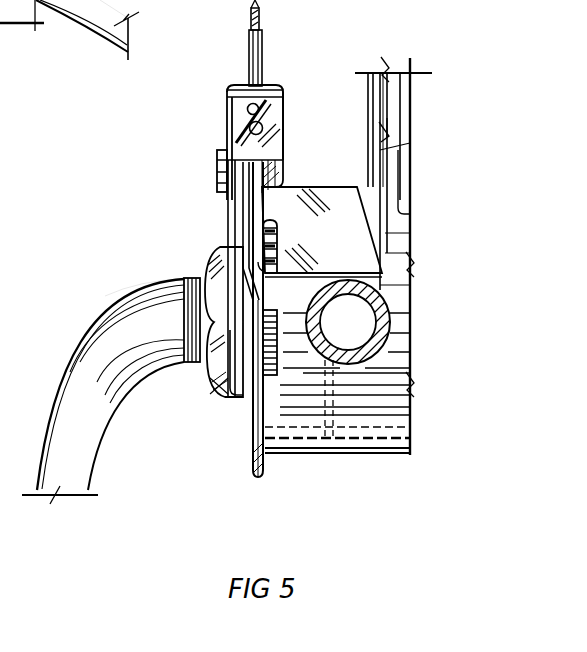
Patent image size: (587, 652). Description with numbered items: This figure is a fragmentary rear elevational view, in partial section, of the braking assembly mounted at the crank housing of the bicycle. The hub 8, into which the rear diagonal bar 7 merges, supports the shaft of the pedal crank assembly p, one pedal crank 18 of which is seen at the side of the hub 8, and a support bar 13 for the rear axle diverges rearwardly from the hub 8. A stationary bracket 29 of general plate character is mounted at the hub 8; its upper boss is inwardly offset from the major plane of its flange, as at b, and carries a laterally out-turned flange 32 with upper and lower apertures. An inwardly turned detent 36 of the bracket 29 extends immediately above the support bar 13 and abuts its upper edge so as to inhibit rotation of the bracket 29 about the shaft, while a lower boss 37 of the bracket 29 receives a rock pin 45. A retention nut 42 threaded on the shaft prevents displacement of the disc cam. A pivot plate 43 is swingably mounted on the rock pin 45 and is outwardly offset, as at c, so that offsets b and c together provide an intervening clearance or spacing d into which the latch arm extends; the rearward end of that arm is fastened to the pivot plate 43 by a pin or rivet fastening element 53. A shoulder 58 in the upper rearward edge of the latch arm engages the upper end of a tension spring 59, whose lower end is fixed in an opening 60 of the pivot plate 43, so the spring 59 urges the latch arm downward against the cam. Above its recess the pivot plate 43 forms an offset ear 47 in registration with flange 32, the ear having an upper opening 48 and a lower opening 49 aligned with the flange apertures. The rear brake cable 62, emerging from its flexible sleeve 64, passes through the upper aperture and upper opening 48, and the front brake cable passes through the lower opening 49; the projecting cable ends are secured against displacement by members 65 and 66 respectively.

The rear diagonal bar 7 is at (402, 102).
The hub 8 is at (357, 450).
The support bar 13 is at (388, 303).
The pedal crank 18 is at (63, 363).
The stationary bracket 29 is at (152, 0).
The out-turned flange 32 is at (227, 88).
The detent 36 is at (290, 249).
The boss 37 is at (250, 442).
The retention nut 42 is at (212, 268).
The pivot plate 43 is at (243, 228).
The rock pin 45 is at (232, 380).
The offset ear 47 is at (226, 100).
The upper opening 48 is at (279, 101).
The lower opening 49 is at (262, 128).
The fastening element 53 is at (217, 166).
The shoulder 58 is at (278, 165).
The tension spring 59 is at (278, 236).
The opening 60 is at (263, 378).
The brake cable 62 is at (262, 20).
The flexible sleeve 64 is at (260, 38).
The securing member 65 is at (280, 139).
The securing member 66 is at (258, 114).
The offset b is at (282, 176).
The offset c is at (237, 213).
The spacing d is at (237, 242).
The pedal crank assembly p is at (113, 302).